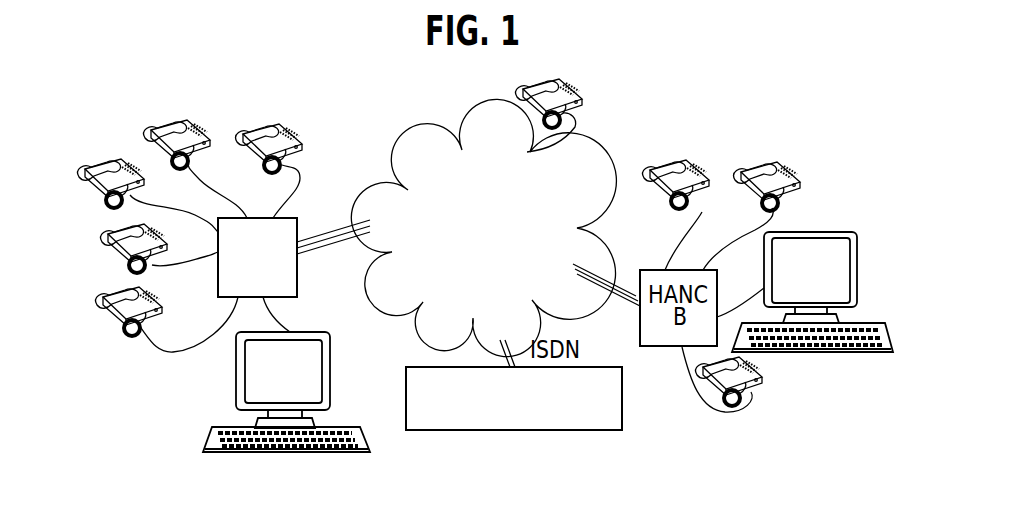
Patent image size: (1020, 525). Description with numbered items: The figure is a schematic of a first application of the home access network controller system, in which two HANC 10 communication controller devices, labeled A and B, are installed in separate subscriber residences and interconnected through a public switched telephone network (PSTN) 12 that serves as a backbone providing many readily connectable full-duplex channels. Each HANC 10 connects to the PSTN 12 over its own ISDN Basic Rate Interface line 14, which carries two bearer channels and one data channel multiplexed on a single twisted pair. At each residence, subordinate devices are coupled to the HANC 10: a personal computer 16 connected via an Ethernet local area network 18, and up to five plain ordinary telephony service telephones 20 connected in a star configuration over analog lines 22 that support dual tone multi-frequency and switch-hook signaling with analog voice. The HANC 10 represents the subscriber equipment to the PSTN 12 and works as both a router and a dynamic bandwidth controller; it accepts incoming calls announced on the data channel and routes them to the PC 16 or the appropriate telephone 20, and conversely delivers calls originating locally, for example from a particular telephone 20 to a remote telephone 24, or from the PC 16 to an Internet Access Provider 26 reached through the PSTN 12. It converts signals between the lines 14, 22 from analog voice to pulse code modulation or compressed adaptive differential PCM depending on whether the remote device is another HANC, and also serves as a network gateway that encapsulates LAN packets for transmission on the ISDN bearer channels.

The home access network controller (HANC) 10 is at (298, 232).
The public switched telephone network (PSTN) 12 is at (427, 128).
The ISDN Basic Rate Interface (BRI) line 14 is at (322, 255).
The personal computer (PC) 16 is at (302, 452).
The Ethernet local area network (LAN) 18 is at (290, 313).
The POTS telephone 20 is at (243, 124).
The analog line 22 is at (125, 217).
The remote telephone 24 is at (567, 83).
The Internet Access Provider 26 is at (622, 405).